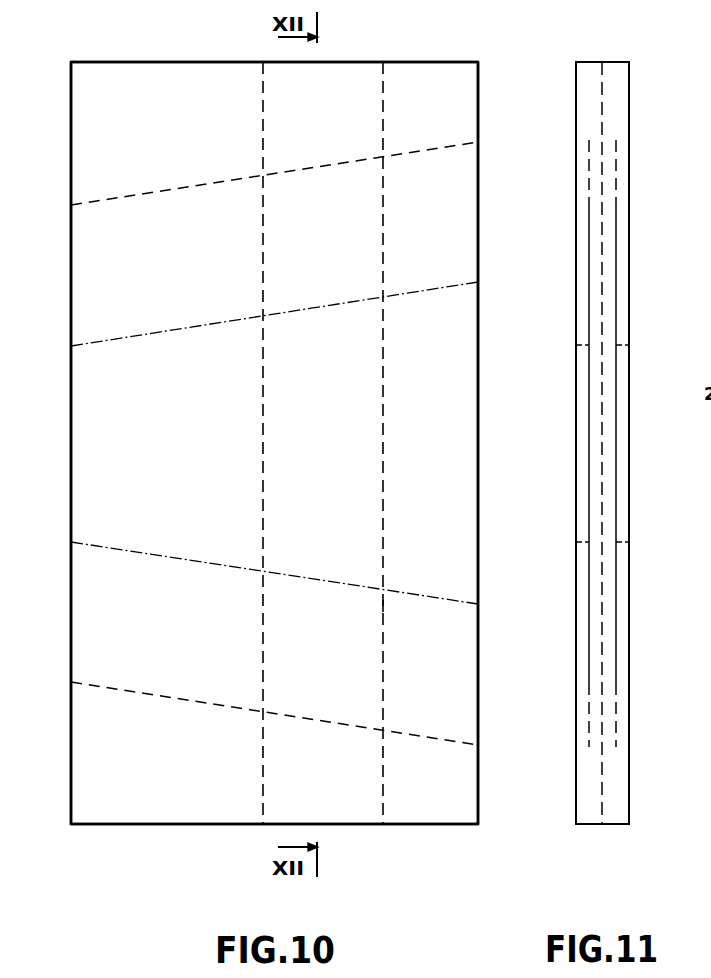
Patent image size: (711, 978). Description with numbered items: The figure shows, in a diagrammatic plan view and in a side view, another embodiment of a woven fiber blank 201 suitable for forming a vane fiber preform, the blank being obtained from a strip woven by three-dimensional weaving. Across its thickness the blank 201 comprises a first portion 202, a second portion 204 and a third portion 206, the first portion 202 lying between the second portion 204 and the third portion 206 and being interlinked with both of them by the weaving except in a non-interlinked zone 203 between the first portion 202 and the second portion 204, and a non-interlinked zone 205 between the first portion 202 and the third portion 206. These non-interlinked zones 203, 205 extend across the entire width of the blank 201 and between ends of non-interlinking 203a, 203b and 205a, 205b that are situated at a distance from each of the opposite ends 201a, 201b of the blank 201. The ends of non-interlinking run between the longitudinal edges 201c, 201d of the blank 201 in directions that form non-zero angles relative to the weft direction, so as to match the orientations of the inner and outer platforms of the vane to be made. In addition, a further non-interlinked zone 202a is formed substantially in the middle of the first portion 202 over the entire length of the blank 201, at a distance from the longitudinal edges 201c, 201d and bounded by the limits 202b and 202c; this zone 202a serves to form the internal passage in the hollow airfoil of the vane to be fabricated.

In FIG. 10, the blank 201 is at (64, 520).
In FIG. 11, the blank 201 is at (602, 443).
In FIG. 10, the end of blank 201a is at (168, 826).
In FIG. 10, the end of blank 201b is at (169, 61).
In FIG. 10, the longitudinal edge of blank 201c is at (69, 325).
In FIG. 10, the longitudinal edge of blank 201d is at (479, 327).
In FIG. 11, the first portion 202 is at (607, 492).
In FIG. 10, the non-interlinked zone 202a is at (274, 314).
In FIG. 11, the non-interlinked zone 202a is at (604, 375).
In FIG. 10, the limit of non-interlinked zone 202b is at (263, 637).
In FIG. 10, the limit of non-interlinked zone 202c is at (383, 607).
In FIG. 11, the non-interlinked zone 203 is at (589, 446).
In FIG. 10, the end of non-interlinking 203a is at (196, 700).
In FIG. 11, the end of non-interlinking 203a is at (589, 745).
In FIG. 10, the end of non-interlinking 203b is at (197, 189).
In FIG. 11, the end of non-interlinking 203b is at (589, 140).
In FIG. 11, the second portion 204 is at (584, 654).
In FIG. 11, the non-interlinked zone 205 is at (617, 446).
In FIG. 11, the end of non-interlinking 205a is at (616, 745).
In FIG. 11, the end of non-interlinking 205b is at (616, 140).
In FIG. 11, the third portion 206 is at (622, 660).